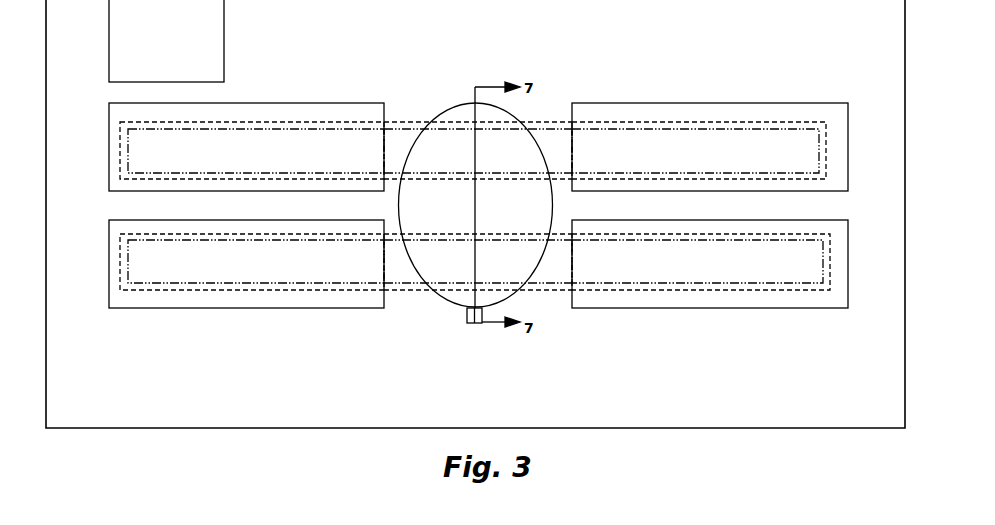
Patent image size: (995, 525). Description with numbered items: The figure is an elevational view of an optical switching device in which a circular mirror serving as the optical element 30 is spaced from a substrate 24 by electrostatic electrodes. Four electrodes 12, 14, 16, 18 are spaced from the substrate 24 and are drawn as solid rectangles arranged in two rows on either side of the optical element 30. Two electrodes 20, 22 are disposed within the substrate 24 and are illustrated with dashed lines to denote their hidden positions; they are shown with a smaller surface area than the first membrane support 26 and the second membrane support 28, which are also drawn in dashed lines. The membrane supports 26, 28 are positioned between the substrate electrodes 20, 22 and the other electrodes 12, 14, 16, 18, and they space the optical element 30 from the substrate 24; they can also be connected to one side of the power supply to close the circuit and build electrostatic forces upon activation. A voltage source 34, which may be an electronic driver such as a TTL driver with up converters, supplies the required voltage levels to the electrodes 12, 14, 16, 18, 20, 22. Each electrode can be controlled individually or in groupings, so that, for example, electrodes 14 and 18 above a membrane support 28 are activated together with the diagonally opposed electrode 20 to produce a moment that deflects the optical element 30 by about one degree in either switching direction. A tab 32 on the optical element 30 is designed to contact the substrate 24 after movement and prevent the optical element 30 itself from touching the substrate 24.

The electrode 12 is at (191, 310).
The electrode 14 is at (244, 102).
The electrode 16 is at (664, 300).
The electrode 18 is at (736, 110).
The substrate electrode 20 is at (805, 262).
The substrate electrode 22 is at (780, 155).
The substrate 24 is at (698, 392).
The first membrane support 26 is at (402, 291).
The second membrane support 28 is at (400, 123).
The optical element 30 is at (497, 116).
The tab 32 is at (466, 318).
The voltage source 34 is at (211, 10).